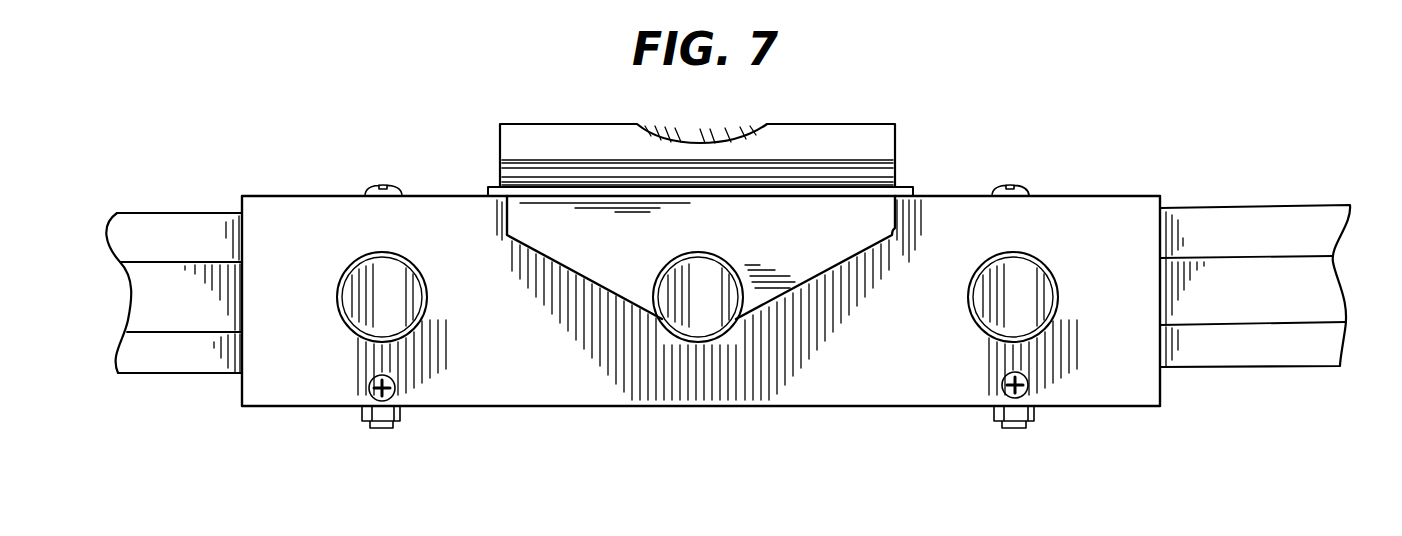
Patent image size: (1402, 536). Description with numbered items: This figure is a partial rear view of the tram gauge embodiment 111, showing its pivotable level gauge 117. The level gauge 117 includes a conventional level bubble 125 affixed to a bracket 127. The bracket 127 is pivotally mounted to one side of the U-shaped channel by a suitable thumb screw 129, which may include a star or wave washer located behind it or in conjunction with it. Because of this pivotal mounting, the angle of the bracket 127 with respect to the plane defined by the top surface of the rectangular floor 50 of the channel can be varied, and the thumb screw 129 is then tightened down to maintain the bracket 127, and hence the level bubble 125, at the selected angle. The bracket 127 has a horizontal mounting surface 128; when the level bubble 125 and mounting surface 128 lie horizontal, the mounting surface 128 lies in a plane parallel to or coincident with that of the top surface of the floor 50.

The rectangular floor 50 is at (455, 200).
The tram gauge embodiment 111 is at (1082, 123).
The pivotable level gauge 117 is at (853, 122).
The level bubble 125 is at (893, 142).
The bracket 127 is at (820, 247).
The horizontal mounting surface 128 is at (908, 186).
The thumb screw 129 is at (713, 307).